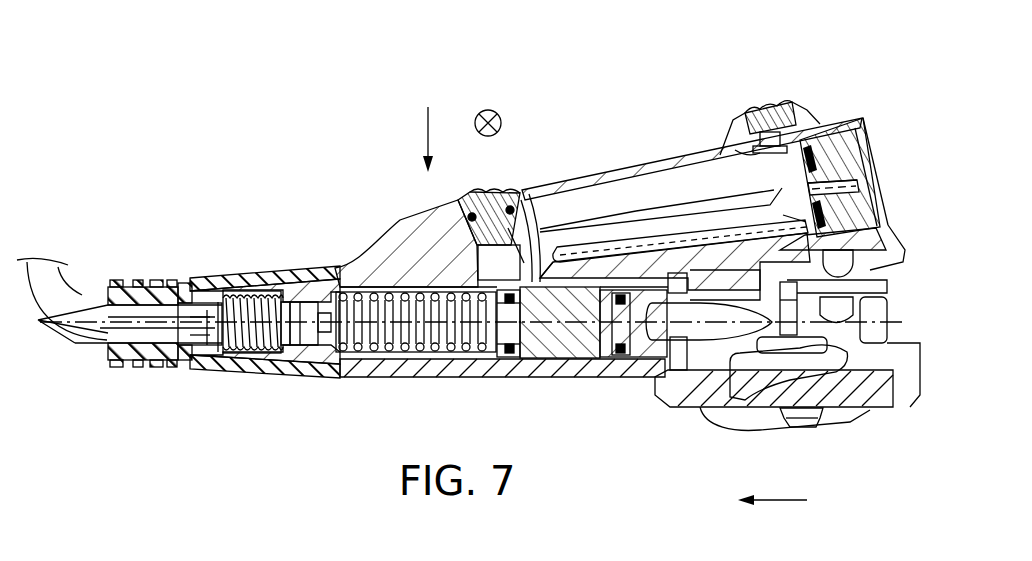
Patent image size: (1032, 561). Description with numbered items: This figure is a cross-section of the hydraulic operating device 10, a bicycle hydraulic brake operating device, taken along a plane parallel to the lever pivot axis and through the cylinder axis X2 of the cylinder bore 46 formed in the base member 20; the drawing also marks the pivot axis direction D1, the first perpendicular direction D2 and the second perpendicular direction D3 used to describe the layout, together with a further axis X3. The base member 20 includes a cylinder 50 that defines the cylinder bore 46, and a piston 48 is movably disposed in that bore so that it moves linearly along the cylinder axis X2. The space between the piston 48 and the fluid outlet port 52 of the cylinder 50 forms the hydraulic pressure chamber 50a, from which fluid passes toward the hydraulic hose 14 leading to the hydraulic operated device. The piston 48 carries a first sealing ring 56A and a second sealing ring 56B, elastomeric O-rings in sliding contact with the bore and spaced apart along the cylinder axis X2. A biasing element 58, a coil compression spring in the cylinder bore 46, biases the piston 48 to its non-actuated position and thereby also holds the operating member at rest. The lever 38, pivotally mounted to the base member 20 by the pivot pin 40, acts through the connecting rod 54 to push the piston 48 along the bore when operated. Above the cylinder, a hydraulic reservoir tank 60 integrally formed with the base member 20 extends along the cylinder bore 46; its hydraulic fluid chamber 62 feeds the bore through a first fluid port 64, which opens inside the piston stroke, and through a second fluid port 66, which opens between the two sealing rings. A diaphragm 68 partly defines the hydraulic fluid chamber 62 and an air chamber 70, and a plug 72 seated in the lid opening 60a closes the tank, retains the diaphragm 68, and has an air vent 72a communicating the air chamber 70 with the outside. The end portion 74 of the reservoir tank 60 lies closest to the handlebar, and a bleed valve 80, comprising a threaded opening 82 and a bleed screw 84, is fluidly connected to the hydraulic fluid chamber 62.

The hydraulic operating device 10 is at (142, 163).
The hydraulic hose 14 is at (82, 295).
The base member 20 is at (915, 258).
The lever 38 is at (903, 408).
The pivot pin 40 is at (795, 430).
The cylinder bore 46 is at (406, 360).
The piston 48 is at (571, 360).
The cylinder 50 is at (362, 376).
The hydraulic pressure chamber 50a is at (456, 360).
The fluid outlet port 52 is at (337, 340).
The connecting rod 54 is at (708, 327).
The first sealing ring 56A is at (633, 380).
The second sealing ring 56B is at (514, 360).
The biasing element 58 is at (377, 290).
The hydraulic reservoir tank 60 is at (612, 172).
The lid opening 60a is at (872, 145).
The hydraulic fluid chamber 62 is at (687, 185).
The first fluid port 64 is at (482, 250).
The second fluid port 66 is at (512, 212).
The diaphragm 68 is at (655, 225).
The air chamber 70 is at (876, 214).
The plug 72 is at (832, 153).
The air vent 72a is at (860, 187).
The end portion 74 is at (866, 118).
The bleed valve 80 is at (788, 84).
The threaded opening 82 is at (772, 157).
The bleed screw 84 is at (752, 110).
The pivot axis direction D1 is at (428, 125).
The first perpendicular direction D2 is at (500, 118).
The second perpendicular direction D3 is at (779, 502).
The cylinder axis X2 is at (196, 327).
The axis X3 is at (605, 212).